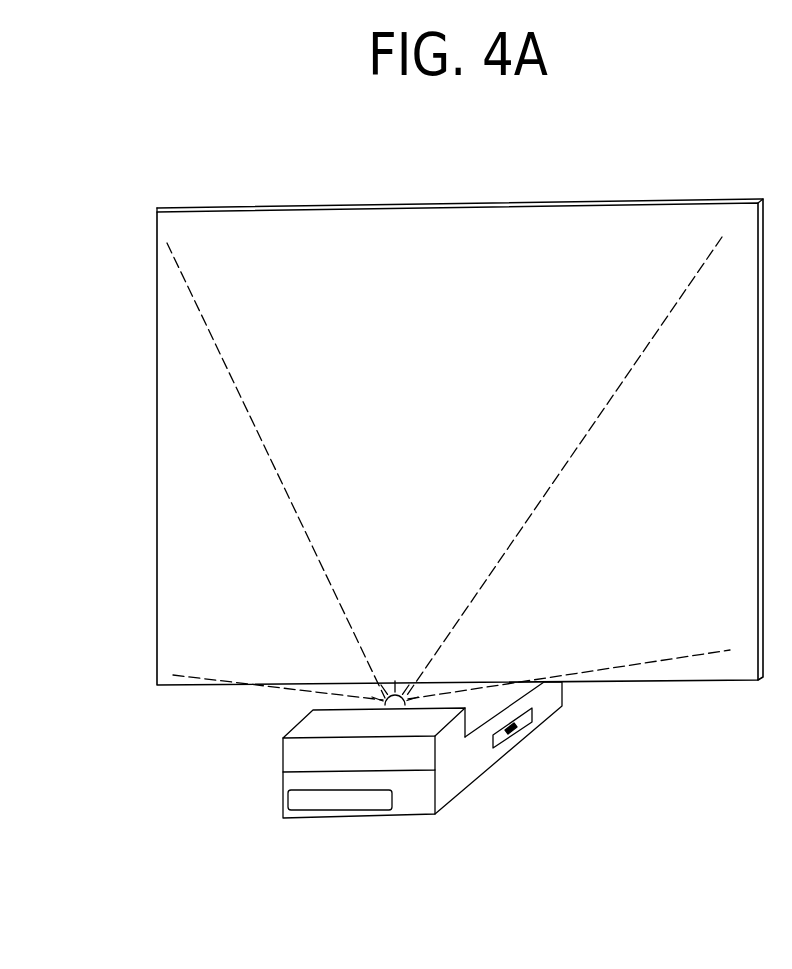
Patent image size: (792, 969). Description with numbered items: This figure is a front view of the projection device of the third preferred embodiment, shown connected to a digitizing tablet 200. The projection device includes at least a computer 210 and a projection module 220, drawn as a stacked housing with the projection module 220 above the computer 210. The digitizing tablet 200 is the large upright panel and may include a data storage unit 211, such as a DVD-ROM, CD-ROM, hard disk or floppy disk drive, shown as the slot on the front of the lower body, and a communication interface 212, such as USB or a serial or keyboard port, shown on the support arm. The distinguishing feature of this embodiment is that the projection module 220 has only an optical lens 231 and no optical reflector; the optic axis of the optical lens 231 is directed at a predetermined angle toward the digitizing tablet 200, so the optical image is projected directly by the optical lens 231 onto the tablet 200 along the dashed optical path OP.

The digitizing tablet 200 is at (713, 199).
The optical path OP is at (337, 598).
The optical lens 231 is at (391, 685).
The projection module 220 is at (283, 747).
The computer 210 is at (283, 800).
The data storage unit 211 is at (357, 810).
The communication interface 212 is at (507, 745).